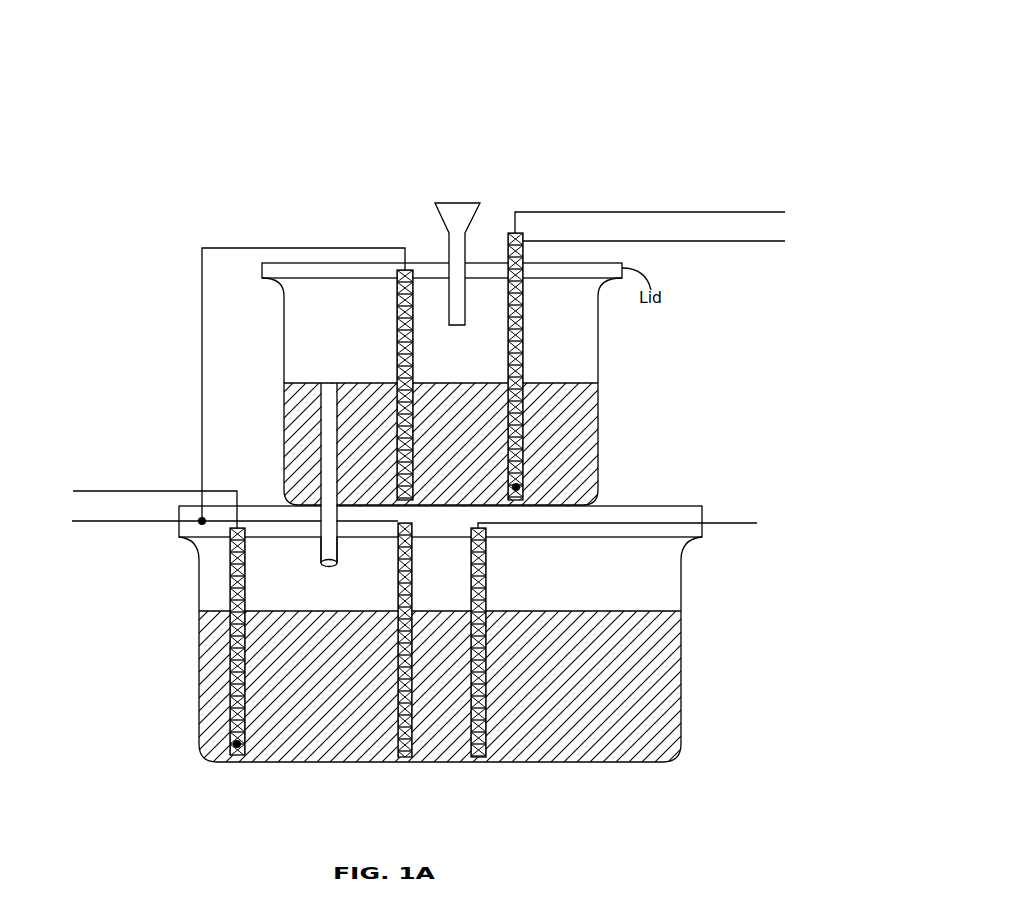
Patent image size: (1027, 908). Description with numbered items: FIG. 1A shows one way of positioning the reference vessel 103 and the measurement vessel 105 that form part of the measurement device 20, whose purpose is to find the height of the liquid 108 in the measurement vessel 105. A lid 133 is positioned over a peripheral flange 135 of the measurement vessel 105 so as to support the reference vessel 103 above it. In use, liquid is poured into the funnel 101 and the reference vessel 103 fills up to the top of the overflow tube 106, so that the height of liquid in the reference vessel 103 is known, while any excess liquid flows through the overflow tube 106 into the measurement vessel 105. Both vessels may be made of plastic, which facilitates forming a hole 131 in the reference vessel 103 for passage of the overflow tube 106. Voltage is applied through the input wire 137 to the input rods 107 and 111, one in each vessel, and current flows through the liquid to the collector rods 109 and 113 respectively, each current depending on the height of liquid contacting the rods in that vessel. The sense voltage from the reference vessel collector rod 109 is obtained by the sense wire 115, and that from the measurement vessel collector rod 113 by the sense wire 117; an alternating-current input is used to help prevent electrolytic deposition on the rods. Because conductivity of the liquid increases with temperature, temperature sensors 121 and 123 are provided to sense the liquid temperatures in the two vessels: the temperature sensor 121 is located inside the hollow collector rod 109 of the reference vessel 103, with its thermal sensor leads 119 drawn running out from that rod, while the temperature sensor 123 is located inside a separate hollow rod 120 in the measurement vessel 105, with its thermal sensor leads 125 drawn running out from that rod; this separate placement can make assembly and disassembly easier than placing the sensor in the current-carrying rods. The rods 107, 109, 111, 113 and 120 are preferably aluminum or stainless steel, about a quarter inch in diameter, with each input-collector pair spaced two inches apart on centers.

The measurement device 20 is at (250, 92).
The funnel 101 is at (443, 220).
The reference vessel 103 is at (598, 340).
The measurement vessel 105 is at (199, 582).
The overflow tube 106 is at (321, 446).
The input rod 107 is at (397, 366).
The liquid 108 is at (598, 688).
The collector rod 109 is at (523, 363).
The input rod 111 is at (398, 605).
The collector rod 113 is at (486, 603).
The sense wire 115 is at (650, 212).
The sense wire 117 is at (655, 514).
The thermal sensor leads 119 is at (654, 230).
The rod 120 is at (245, 565).
The temperature sensor 121 is at (516, 487).
The temperature sensor 123 is at (237, 747).
The thermal sensor leads 125 is at (155, 490).
The hole 131 is at (322, 500).
The lid 133 is at (655, 540).
The peripheral flange 135 is at (190, 545).
The input wire 137 is at (100, 520).